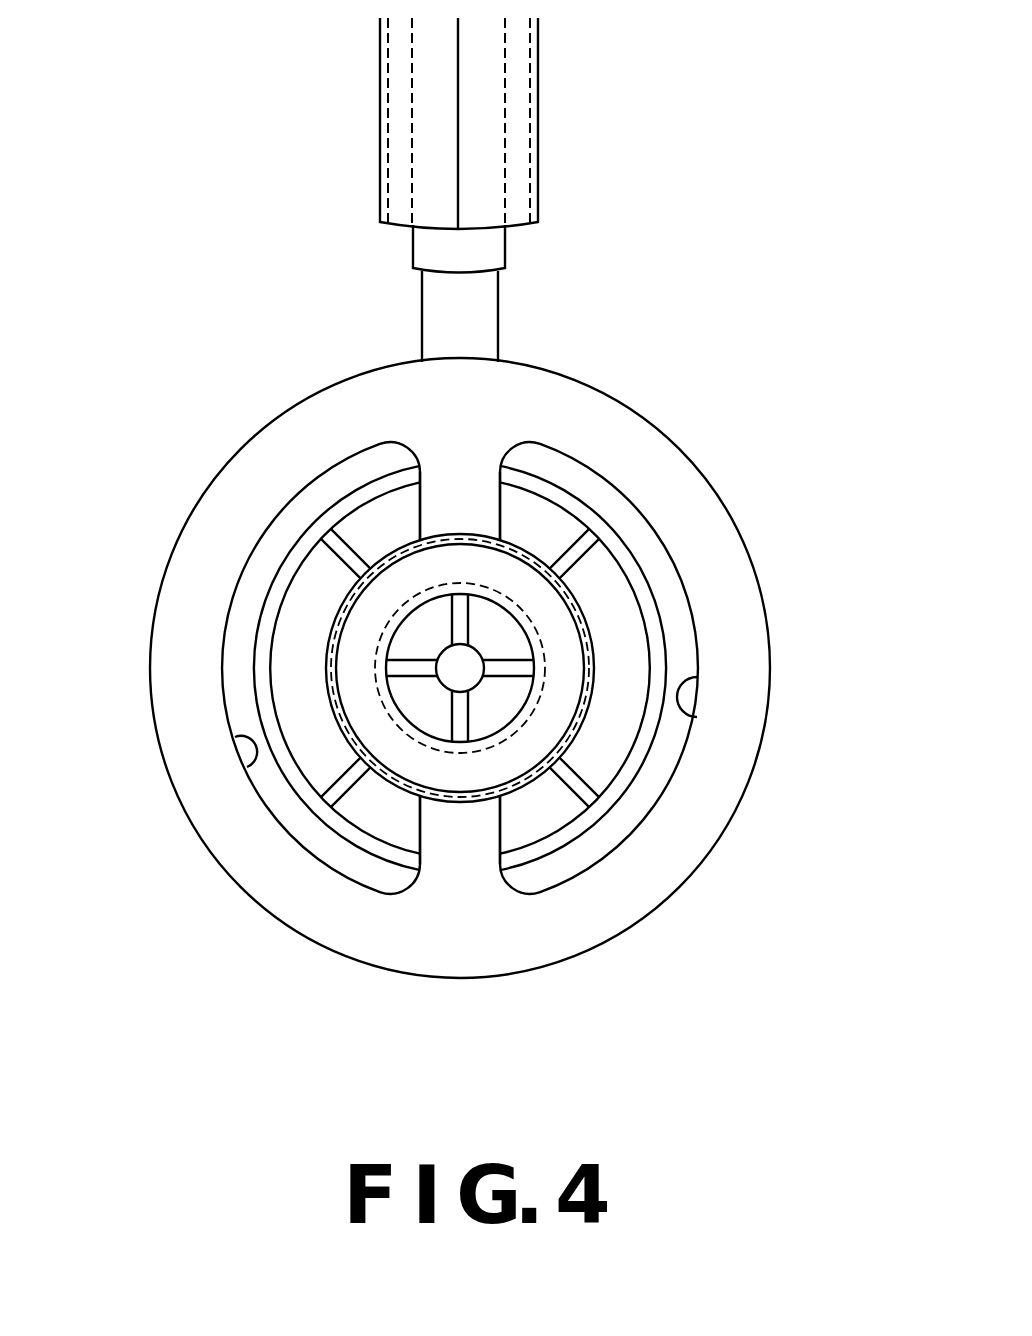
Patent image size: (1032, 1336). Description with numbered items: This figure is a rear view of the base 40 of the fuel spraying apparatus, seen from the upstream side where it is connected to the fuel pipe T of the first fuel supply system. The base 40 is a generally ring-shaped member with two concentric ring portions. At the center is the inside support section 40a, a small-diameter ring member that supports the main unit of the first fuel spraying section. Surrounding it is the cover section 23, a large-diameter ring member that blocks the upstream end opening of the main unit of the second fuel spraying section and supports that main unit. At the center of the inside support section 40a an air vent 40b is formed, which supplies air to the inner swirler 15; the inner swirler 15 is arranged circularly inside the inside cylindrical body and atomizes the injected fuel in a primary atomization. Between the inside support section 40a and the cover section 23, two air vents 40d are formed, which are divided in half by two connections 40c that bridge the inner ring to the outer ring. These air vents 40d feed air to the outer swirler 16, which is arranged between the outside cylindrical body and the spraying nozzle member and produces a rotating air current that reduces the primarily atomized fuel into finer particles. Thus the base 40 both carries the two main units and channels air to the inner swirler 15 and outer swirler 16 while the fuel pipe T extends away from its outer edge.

The fuel pipe T is at (420, 318).
The base 40 is at (728, 858).
The cover section 23 is at (587, 912).
The connection 40c is at (482, 505).
The air vent 40d is at (697, 717).
The inside support section 40a is at (388, 595).
The outer swirler 16 is at (298, 637).
The air vent 40b is at (398, 716).
The inner swirler 15 is at (507, 635).